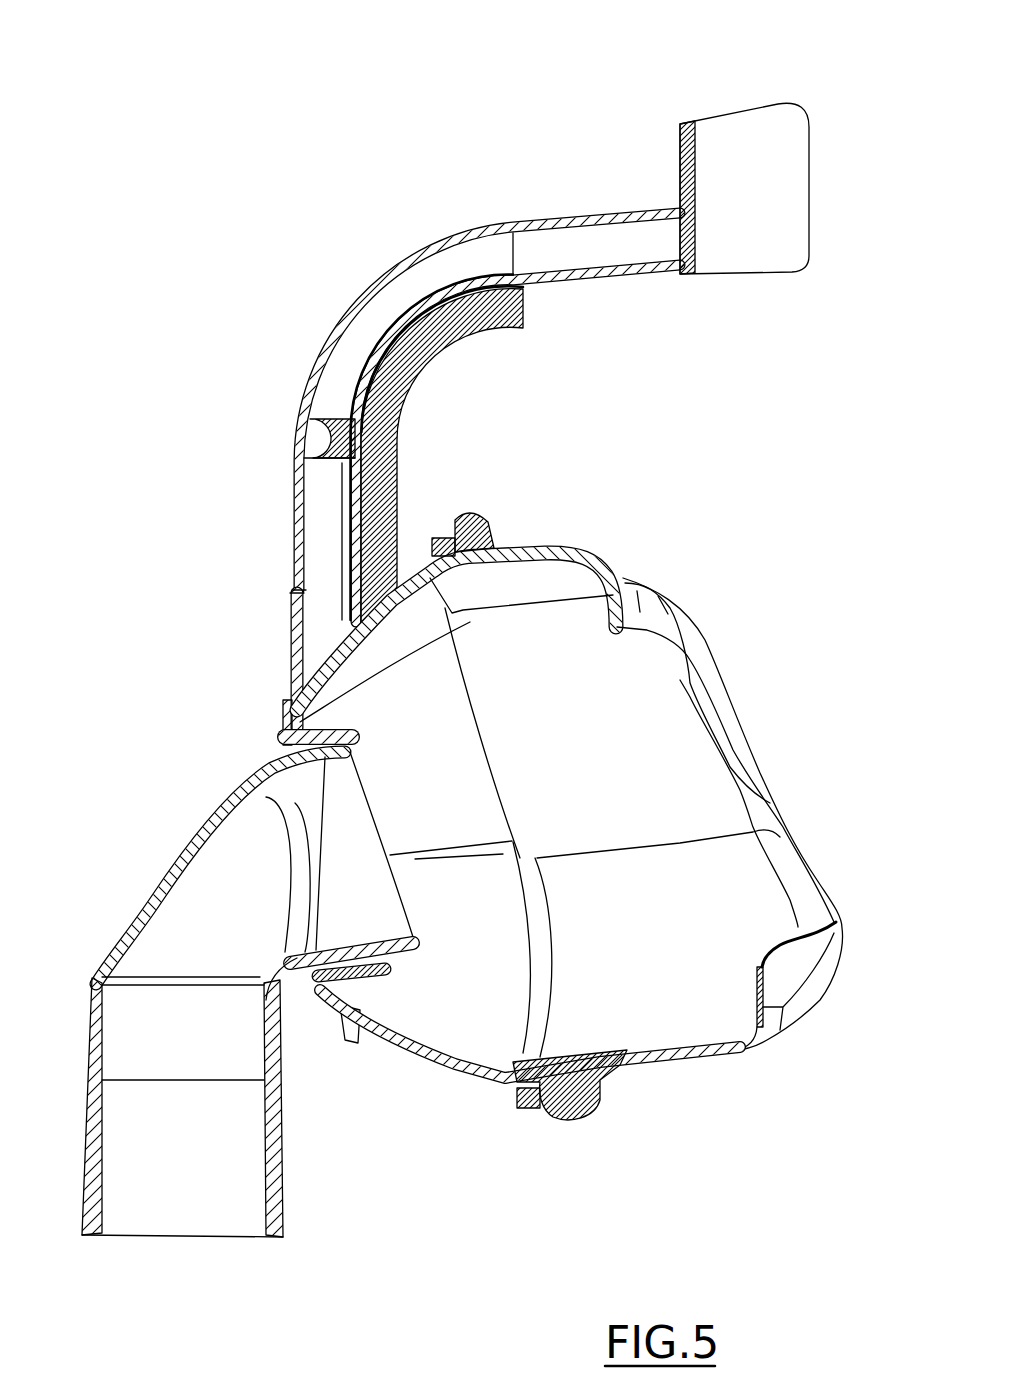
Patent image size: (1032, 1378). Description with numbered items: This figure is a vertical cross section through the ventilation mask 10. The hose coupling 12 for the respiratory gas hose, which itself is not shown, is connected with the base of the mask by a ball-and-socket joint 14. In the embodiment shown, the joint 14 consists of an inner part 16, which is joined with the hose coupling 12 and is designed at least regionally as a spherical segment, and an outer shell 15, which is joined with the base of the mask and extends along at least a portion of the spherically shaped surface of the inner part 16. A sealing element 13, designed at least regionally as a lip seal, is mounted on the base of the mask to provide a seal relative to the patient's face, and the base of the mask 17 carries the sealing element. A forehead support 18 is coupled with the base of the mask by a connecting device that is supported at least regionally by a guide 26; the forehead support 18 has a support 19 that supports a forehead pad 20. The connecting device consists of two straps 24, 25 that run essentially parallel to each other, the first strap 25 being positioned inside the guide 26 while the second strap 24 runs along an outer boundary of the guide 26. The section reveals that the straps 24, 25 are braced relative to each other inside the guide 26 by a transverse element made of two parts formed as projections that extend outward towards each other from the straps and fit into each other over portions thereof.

The helmet shell 10 is at (583, 822).
The mounting bracket 12 is at (277, 1183).
The lower rim 13 is at (414, 1065).
The attachment assembly 14 is at (251, 829).
The flange 15 is at (267, 771).
The retaining strip 16 is at (292, 722).
The upper rim 17 is at (590, 548).
The support arm 18 is at (484, 376).
The arm core 19 is at (457, 347).
The pad 20 is at (723, 118).
The lower tube wall 24 is at (594, 277).
The upper tube wall 25 is at (603, 213).
The sleeve 26 is at (292, 512).